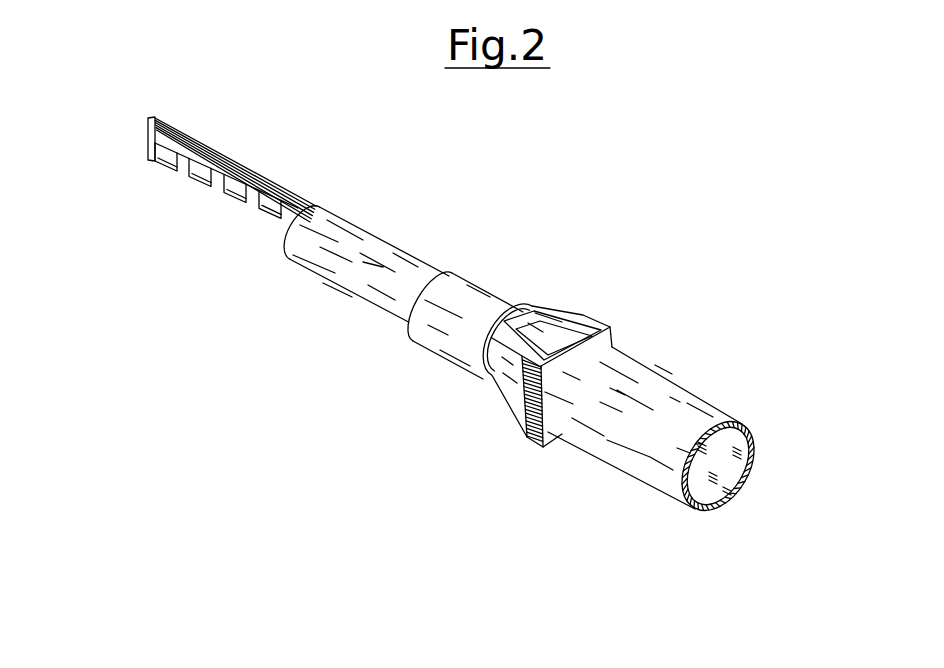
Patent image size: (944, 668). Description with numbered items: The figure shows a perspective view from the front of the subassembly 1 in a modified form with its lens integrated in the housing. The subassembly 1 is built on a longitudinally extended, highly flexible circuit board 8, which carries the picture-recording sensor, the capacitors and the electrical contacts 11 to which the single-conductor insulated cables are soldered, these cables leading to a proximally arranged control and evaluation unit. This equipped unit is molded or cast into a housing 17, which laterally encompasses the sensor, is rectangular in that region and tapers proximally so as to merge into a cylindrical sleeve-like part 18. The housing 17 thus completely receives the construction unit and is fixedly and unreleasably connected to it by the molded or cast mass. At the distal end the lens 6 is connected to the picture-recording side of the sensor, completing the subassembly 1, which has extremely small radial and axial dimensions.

The subassembly 1 is at (502, 279).
The lens 6 is at (666, 402).
The circuit board 8 is at (191, 138).
The electrical contacts 11 is at (166, 164).
The housing 17 is at (496, 396).
The cylindrical sleeve-like part 18 is at (409, 318).